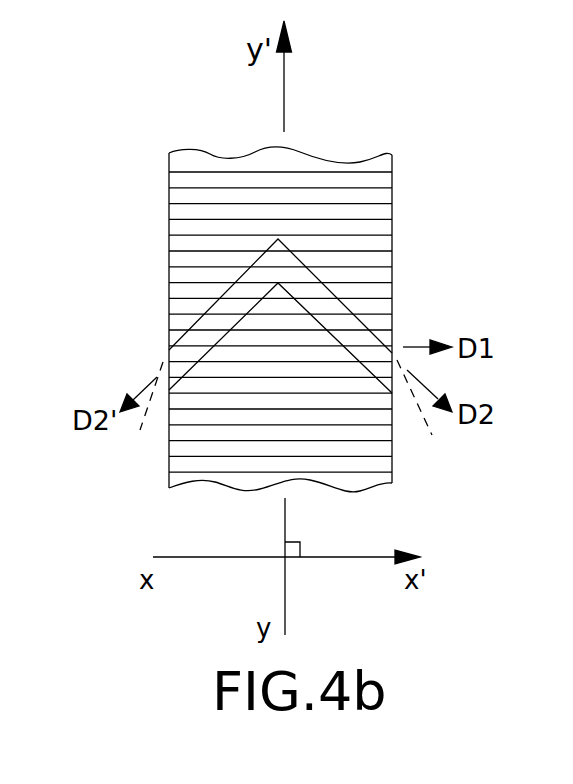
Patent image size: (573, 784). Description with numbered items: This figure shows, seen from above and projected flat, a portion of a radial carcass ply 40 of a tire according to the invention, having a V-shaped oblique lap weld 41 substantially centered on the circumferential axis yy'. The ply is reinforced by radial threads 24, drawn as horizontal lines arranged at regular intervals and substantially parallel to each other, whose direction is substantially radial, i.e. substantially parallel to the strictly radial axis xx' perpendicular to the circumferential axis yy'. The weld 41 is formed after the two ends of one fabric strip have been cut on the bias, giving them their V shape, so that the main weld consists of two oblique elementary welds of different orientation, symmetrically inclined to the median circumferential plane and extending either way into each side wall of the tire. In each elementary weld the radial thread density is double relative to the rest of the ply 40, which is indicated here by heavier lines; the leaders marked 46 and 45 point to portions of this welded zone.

The radial carcass ply 40 is at (352, 123).
The radial threads 24 is at (188, 268).
The V-shaped oblique lap weld 41 is at (363, 337).
The inner V-shaped groove 46 is at (187, 344).
The diffraction direction indicator 45 is at (186, 379).